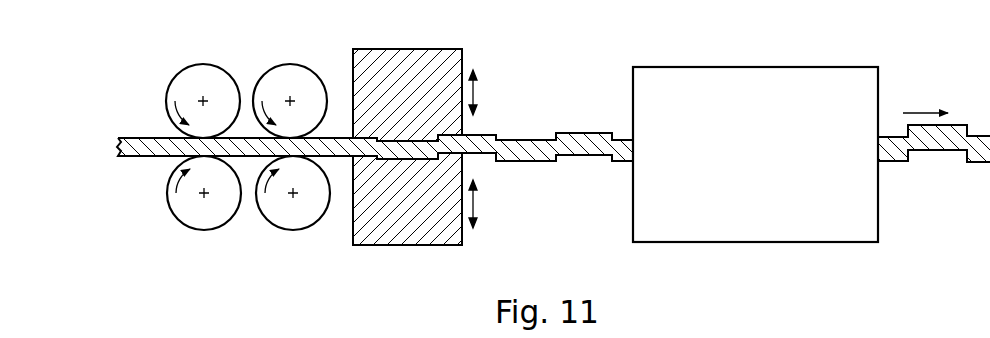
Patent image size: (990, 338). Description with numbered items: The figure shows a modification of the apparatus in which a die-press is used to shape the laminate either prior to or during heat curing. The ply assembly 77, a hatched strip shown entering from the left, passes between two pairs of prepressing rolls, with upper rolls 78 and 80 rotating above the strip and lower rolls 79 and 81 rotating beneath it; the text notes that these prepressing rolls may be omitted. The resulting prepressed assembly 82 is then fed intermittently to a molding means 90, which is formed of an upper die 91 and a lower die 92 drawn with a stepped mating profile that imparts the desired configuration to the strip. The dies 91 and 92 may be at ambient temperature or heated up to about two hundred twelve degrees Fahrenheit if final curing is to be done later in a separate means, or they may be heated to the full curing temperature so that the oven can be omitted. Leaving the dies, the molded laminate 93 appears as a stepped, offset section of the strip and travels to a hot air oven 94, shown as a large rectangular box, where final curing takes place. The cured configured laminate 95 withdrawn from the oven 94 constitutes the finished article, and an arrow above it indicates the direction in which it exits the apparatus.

The ply assembly 77 is at (137, 147).
The prepressing roll 78 is at (208, 75).
The prepressing roll 79 is at (190, 213).
The prepressing roll 80 is at (284, 75).
The prepressing roll 81 is at (287, 217).
The prepressed assembly 82 is at (347, 133).
The molding means 90 is at (410, 146).
The die 91 is at (403, 57).
The die 92 is at (383, 238).
The molded laminate 93 is at (518, 143).
The hot air oven 94 is at (652, 75).
The cured configured laminate 95 is at (940, 145).